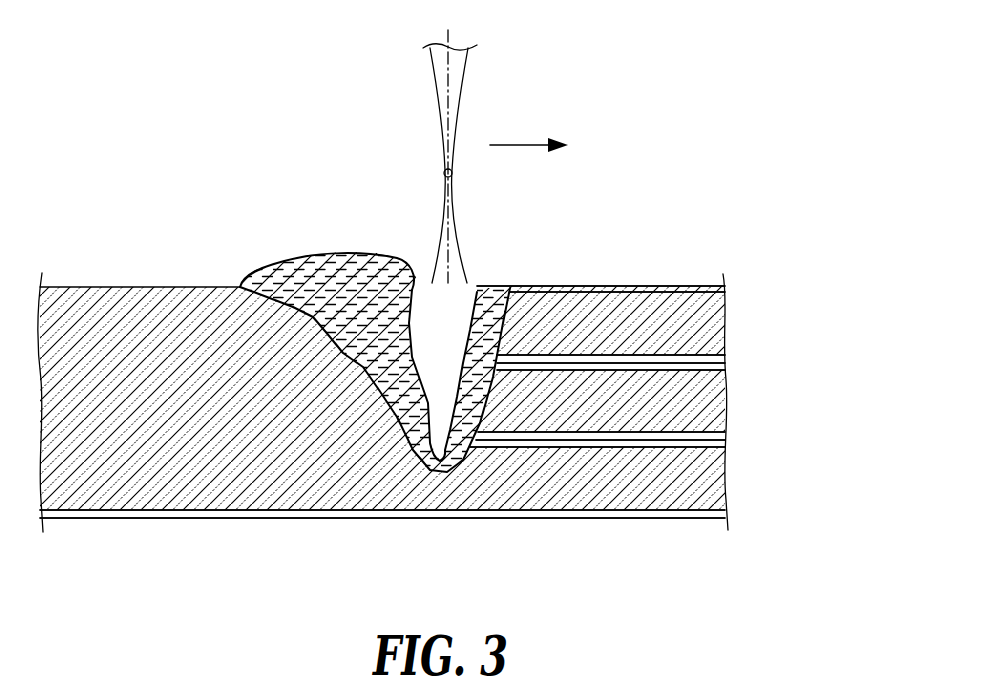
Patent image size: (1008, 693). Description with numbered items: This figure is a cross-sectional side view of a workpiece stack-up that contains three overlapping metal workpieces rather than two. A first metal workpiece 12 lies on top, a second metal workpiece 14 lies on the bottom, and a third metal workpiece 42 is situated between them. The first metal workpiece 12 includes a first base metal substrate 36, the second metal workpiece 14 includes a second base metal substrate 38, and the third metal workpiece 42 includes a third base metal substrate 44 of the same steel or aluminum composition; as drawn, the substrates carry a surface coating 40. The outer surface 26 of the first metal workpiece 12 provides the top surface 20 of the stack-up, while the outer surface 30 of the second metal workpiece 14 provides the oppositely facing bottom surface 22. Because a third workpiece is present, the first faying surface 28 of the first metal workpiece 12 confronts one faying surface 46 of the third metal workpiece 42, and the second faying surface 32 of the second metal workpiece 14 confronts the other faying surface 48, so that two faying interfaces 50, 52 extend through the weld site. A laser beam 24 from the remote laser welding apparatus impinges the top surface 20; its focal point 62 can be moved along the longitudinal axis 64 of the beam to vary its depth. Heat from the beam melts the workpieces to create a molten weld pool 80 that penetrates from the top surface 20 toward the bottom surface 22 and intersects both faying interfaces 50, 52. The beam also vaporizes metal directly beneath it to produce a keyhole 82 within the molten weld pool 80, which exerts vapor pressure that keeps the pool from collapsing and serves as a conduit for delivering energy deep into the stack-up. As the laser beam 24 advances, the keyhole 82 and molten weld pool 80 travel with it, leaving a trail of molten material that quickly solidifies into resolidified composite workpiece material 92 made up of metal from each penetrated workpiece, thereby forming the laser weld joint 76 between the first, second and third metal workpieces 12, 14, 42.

The first metal workpiece 12 is at (669, 316).
The second metal workpiece 14 is at (654, 494).
The third base metal substrate 44 is at (684, 407).
The top surface 20 is at (592, 275).
The bottom surface 22 is at (552, 535).
The laser beam 24 is at (435, 100).
The outer surface 26 is at (649, 285).
The first faying surface 28 is at (542, 364).
The outer surface 30 is at (637, 520).
The second faying surface 32 is at (515, 448).
The first base metal substrate 36 is at (708, 325).
The second base metal substrate 38 is at (727, 441).
The surface coating 40 is at (730, 285).
The third metal workpiece 42 is at (707, 404).
The faying surface 46 is at (584, 358).
The faying surface 48 is at (549, 433).
The faying interface 50 is at (524, 345).
The faying interface 52 is at (488, 463).
The focal point 62 is at (445, 166).
The longitudinal axis 64 is at (470, 82).
The laser weld joint 76 is at (127, 325).
The molten weld pool 80 is at (329, 267).
The keyhole 82 is at (441, 293).
The resolidified composite workpiece material 92 is at (217, 297).